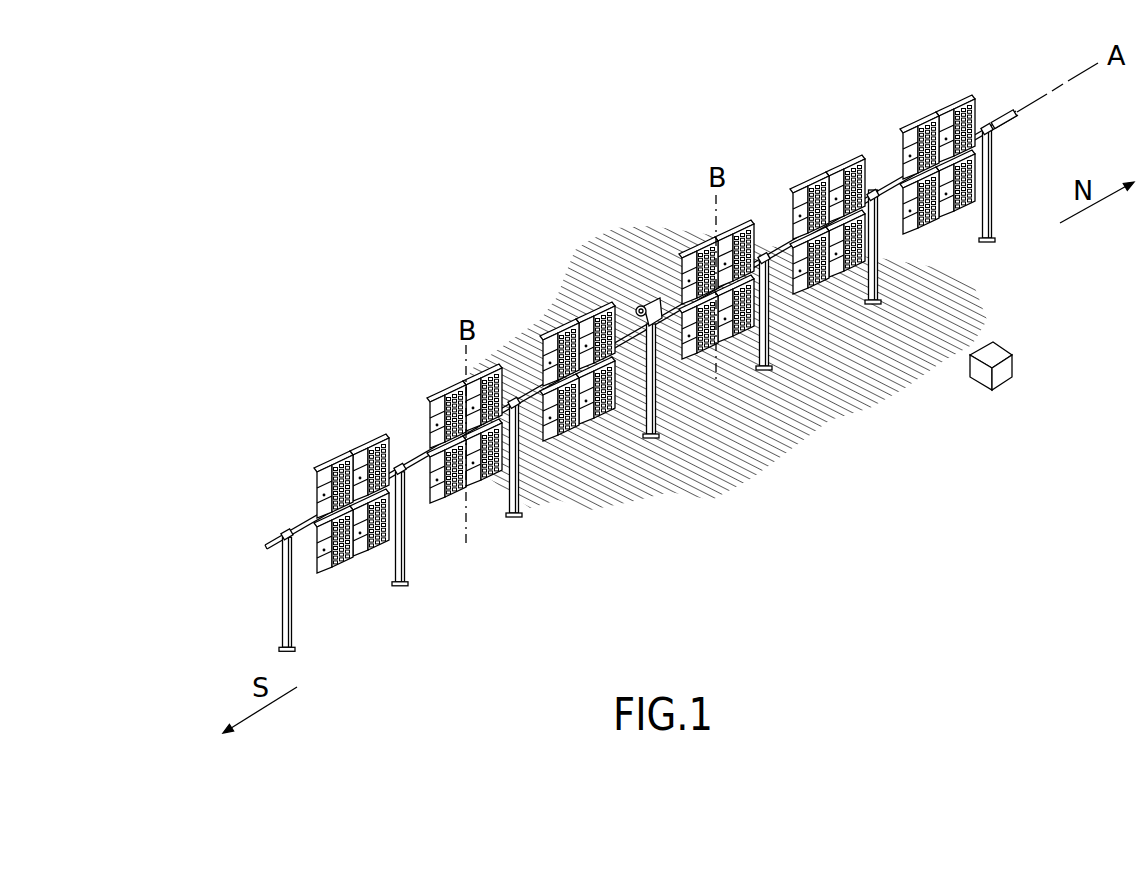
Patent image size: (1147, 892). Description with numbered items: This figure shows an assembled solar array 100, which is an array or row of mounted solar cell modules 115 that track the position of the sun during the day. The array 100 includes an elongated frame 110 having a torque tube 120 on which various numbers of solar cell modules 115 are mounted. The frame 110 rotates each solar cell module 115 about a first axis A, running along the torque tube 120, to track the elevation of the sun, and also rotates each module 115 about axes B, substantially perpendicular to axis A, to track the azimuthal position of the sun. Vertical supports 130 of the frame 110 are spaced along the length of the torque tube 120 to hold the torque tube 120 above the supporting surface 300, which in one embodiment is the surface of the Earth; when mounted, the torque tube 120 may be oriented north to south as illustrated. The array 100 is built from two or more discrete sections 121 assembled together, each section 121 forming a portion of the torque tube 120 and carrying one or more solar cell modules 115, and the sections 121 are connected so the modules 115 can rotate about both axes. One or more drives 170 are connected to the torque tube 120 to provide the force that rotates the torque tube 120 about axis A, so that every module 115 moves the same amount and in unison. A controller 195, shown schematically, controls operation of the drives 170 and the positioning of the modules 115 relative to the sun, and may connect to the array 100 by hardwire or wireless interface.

The solar array 100 is at (298, 188).
The elongated frame 110 is at (255, 540).
The solar cell module 115 is at (333, 458).
The torque tube 120 is at (298, 525).
The discrete section 121 is at (770, 250).
The vertical support 130 is at (297, 643).
The drive 170 is at (648, 318).
The controller 195 is at (1000, 372).
The supporting surface 300 is at (1056, 273).